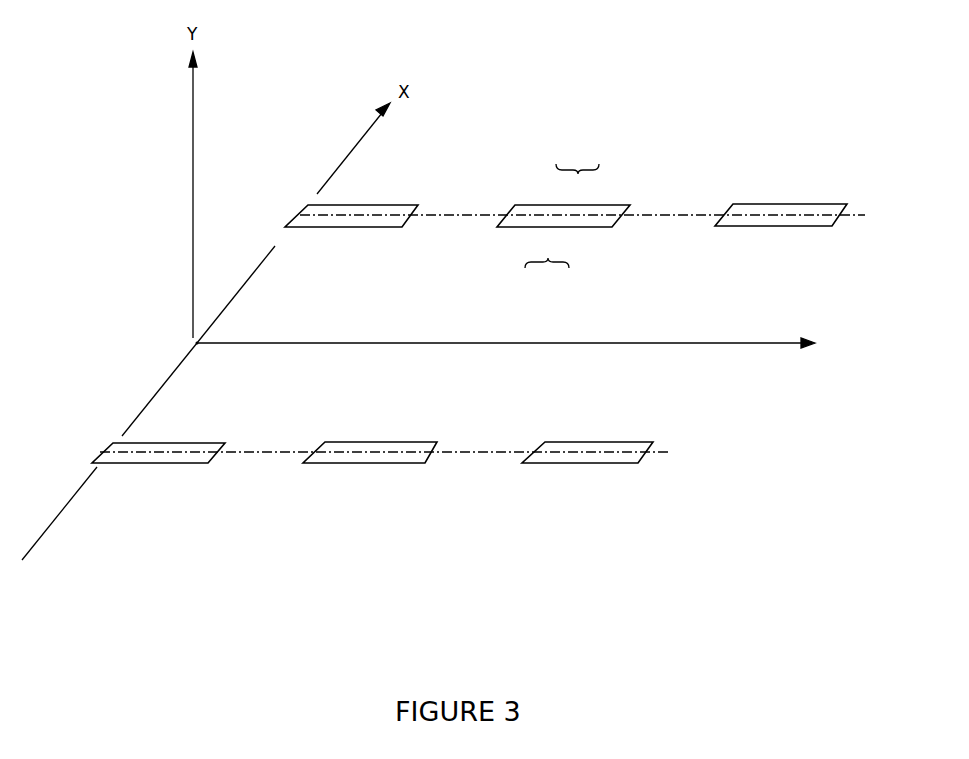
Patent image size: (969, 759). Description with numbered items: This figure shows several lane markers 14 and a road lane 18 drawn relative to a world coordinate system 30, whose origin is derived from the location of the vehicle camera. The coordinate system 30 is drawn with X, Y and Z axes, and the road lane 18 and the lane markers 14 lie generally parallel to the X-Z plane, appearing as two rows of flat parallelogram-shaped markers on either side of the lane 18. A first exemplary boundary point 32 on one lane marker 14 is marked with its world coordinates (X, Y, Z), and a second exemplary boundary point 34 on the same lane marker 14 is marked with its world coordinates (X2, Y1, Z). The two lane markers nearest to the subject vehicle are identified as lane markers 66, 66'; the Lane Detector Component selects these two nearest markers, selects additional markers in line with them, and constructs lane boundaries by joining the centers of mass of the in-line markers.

The lane marker 14 is at (795, 210).
The road lane 18 is at (706, 328).
The world coordinate system 30 is at (228, 332).
The first exemplary boundary point 32 is at (578, 175).
The second exemplary boundary point 34 is at (556, 233).
The nearest lane marker 66 is at (355, 201).
The nearest lane marker 66' is at (166, 471).